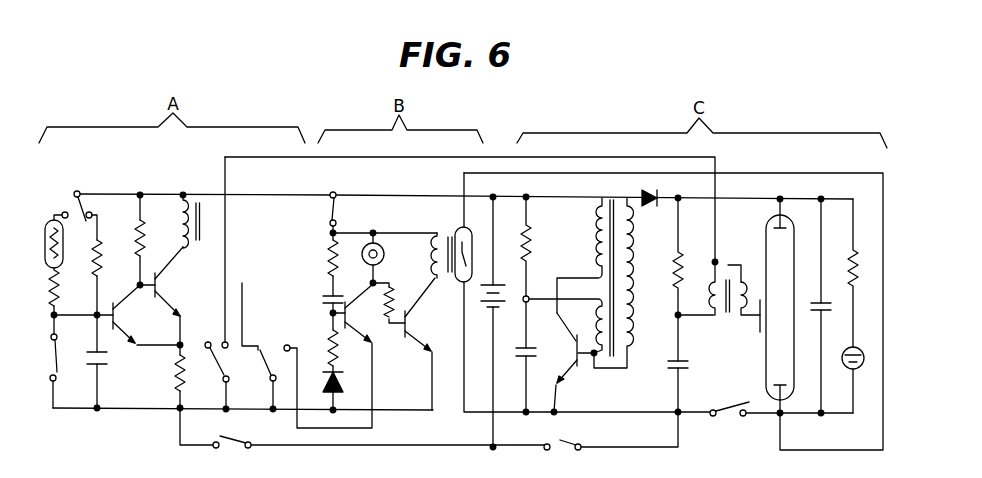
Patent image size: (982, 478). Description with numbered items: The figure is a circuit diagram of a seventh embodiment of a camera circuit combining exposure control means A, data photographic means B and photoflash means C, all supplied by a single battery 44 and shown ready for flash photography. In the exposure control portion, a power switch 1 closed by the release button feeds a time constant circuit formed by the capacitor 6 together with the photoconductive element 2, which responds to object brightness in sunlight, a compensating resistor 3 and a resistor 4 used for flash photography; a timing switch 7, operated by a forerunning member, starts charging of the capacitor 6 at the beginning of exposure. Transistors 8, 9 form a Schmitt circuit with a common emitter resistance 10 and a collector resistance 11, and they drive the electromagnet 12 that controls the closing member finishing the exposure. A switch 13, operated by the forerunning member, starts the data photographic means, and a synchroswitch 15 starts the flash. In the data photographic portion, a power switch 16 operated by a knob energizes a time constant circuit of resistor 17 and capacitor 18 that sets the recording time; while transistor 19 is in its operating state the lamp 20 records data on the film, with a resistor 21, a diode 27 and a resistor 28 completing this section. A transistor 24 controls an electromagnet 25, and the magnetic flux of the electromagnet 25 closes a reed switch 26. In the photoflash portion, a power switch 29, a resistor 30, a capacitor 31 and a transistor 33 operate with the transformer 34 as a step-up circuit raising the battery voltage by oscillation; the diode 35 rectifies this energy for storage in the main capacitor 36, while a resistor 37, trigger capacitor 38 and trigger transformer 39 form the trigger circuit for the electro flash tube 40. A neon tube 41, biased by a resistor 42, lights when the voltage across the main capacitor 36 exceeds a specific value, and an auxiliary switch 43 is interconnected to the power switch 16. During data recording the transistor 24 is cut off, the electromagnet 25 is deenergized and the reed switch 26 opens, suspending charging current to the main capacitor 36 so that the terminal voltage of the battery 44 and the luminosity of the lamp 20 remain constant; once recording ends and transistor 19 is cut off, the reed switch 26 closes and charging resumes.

The power switch 1 is at (232, 440).
The photoconductive element 2 is at (50, 223).
The resistor 3 is at (58, 284).
The resistor 4 is at (103, 256).
The capacitor 6 is at (105, 364).
The timing switch 7 is at (57, 356).
The transistor 8 is at (116, 313).
The transistor 9 is at (160, 282).
The emitter resistance 10 is at (176, 378).
The collector resistance 11 is at (145, 238).
The electromagnet 12 is at (197, 240).
The switch 13 is at (263, 350).
The synchroswitch 15 is at (206, 359).
The power switch 16 is at (337, 215).
The resistor 17 is at (328, 254).
The capacitor 18 is at (321, 302).
The transistor 19 is at (348, 315).
The lamp 20 is at (385, 254).
The resistor 21 is at (394, 302).
The transistor 24 is at (412, 324).
The electromagnet 25 is at (436, 240).
The reed switch 26 is at (474, 242).
The diode 27 is at (340, 387).
The resistor 28 is at (338, 350).
The power switch 29 is at (585, 440).
The resistor 30 is at (532, 236).
The capacitor 31 is at (514, 353).
The transistor 33 is at (575, 349).
The transformer 34 is at (598, 370).
The diode 35 is at (655, 216).
The main capacitor 36 is at (814, 314).
The resistor 37 is at (673, 281).
The trigger capacitor 38 is at (672, 364).
The trigger transformer 39 is at (726, 264).
The electro flash tube 40 is at (792, 268).
The neon tube 41 is at (857, 348).
The resistor 42 is at (858, 256).
The auxiliary switch 43 is at (722, 408).
The battery 44 is at (476, 312).